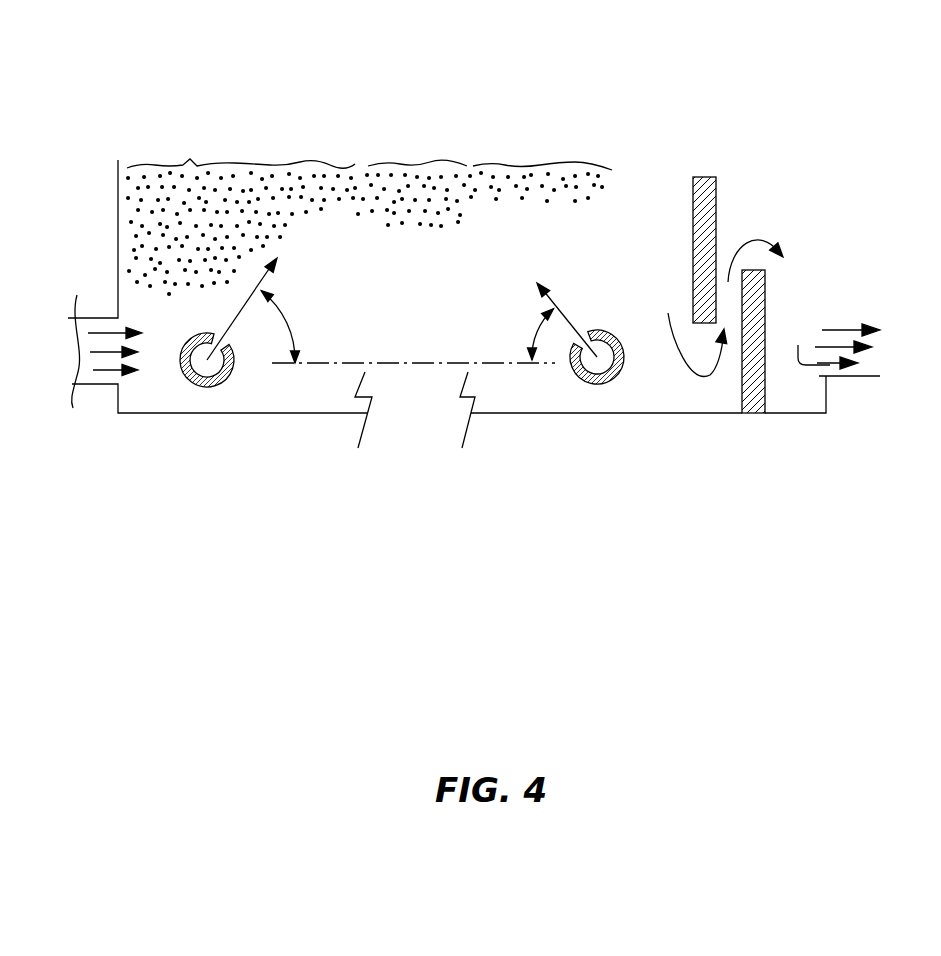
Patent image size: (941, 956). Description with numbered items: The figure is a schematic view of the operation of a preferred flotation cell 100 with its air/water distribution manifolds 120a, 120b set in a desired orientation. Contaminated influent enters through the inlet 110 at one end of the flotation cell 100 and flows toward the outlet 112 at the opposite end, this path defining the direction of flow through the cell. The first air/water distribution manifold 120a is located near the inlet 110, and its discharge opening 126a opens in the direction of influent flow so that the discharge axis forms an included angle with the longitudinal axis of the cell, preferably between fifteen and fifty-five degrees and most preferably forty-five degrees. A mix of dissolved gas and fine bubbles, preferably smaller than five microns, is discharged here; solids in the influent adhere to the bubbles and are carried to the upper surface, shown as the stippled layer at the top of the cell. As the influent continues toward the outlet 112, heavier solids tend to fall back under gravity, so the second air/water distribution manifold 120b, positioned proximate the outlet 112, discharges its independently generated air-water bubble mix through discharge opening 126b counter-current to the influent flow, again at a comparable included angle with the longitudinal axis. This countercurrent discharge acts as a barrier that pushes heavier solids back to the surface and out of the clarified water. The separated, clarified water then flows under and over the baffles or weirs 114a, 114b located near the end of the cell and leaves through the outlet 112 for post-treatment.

The flotation cell 100 is at (118, 188).
The inlet 110 is at (100, 385).
The outlet 112 is at (867, 376).
The baffle 114a is at (708, 177).
The baffle 114b is at (765, 300).
The first air/water distribution manifold 120a is at (192, 387).
The second air/water distribution manifold 120b is at (607, 385).
The discharge opening 126a is at (235, 337).
The discharge opening 126b is at (590, 325).